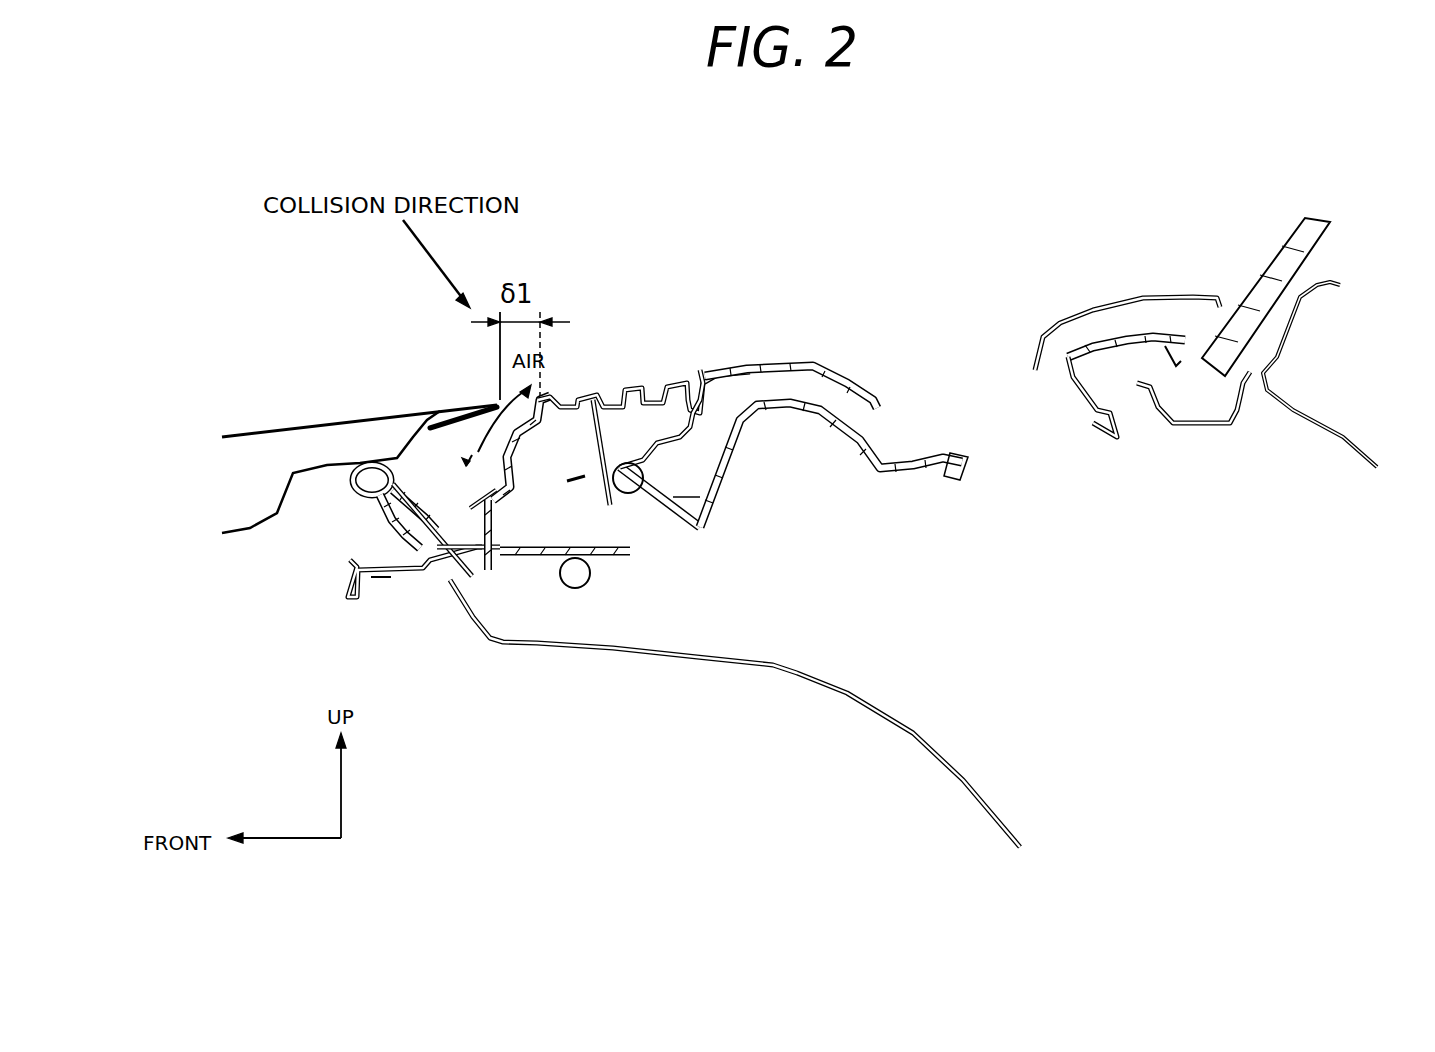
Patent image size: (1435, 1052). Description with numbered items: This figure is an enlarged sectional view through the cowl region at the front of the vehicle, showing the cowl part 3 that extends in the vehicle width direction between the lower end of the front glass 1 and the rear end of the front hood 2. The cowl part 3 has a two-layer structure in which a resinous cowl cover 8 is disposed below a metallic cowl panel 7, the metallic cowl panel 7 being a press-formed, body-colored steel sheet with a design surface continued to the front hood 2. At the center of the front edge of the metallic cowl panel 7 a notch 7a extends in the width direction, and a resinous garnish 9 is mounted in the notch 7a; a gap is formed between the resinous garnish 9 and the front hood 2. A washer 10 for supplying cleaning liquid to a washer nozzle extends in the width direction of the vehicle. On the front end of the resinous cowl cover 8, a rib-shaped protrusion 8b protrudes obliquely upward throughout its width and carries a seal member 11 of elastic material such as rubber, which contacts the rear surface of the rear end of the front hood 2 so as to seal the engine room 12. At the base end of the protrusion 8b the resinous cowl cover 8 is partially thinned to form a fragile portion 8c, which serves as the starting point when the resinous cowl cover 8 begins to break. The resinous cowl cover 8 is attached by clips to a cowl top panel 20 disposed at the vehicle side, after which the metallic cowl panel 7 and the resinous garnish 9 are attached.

The front glass 1 is at (1262, 272).
The front hood 2 is at (330, 426).
The cowl part 3 is at (745, 315).
The metallic cowl panel 7 is at (815, 366).
The notch 7a is at (703, 365).
The resinous cowl cover 8 is at (858, 460).
The protrusion 8b is at (448, 533).
The fragile portion 8c is at (437, 582).
The resinous garnish 9 is at (603, 396).
The washer 10 is at (545, 490).
The seal member 11 is at (356, 492).
The engine room 12 is at (277, 605).
The cowl top panel 20 is at (1208, 428).